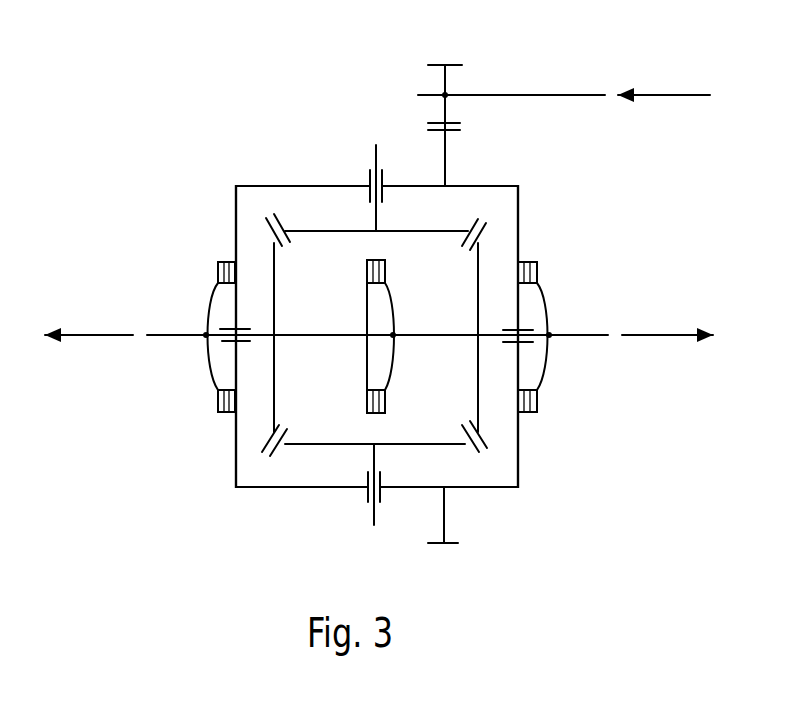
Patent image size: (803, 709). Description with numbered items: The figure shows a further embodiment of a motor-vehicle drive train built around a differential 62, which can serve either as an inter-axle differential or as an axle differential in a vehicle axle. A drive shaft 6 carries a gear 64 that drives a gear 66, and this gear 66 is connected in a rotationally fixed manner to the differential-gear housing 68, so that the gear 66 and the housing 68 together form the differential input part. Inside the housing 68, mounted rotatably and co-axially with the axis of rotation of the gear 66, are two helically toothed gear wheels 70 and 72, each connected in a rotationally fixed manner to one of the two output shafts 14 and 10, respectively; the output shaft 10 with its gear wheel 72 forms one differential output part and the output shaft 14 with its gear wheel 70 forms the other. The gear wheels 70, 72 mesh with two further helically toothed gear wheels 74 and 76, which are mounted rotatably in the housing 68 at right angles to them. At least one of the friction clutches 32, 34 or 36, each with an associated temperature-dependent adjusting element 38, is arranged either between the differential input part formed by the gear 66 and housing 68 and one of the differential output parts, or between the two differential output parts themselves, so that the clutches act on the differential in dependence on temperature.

The drive shaft 6 is at (540, 95).
The output shaft 10 is at (586, 335).
The output shaft 14 is at (165, 335).
The friction clutch 32 is at (537, 268).
The friction clutch 34 is at (215, 408).
The friction clutch 36 is at (386, 266).
The temperature-dependent adjusting element 38 is at (392, 298).
The differential 62 is at (240, 143).
The gear 64 is at (443, 80).
The gear 66 is at (445, 166).
The differential-gear housing 68 is at (490, 186).
The helically toothed gear wheel 70 is at (274, 250).
The helically toothed gear wheel 72 is at (478, 265).
The helically toothed gear wheel 74 is at (314, 231).
The helically toothed gear wheel 76 is at (304, 445).